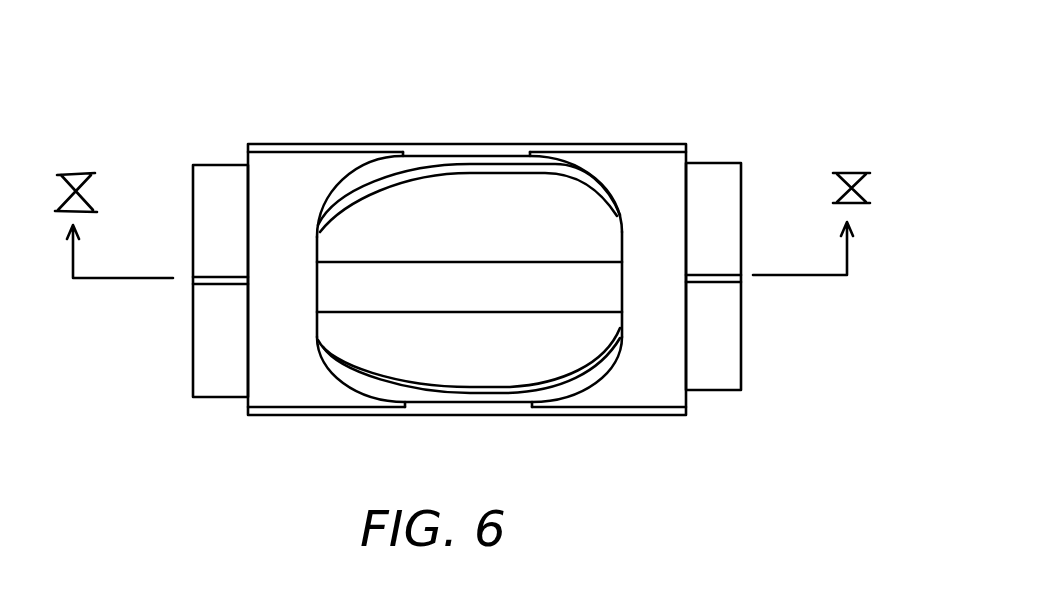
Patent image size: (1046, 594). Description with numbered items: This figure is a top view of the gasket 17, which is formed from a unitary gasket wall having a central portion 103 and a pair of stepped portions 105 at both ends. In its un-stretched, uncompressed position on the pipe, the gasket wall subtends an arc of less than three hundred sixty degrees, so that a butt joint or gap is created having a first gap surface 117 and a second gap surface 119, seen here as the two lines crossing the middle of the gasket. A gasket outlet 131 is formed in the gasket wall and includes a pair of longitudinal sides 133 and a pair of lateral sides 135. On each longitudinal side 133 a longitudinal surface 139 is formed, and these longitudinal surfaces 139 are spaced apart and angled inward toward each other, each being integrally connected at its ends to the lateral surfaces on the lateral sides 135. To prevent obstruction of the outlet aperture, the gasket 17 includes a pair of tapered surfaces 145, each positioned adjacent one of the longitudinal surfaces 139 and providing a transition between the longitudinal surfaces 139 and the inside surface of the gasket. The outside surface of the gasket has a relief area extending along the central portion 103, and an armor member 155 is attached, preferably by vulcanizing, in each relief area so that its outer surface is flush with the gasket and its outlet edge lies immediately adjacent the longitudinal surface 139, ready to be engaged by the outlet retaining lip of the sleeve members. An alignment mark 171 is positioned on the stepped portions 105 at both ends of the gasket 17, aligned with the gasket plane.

The gasket 17 is at (639, 91).
The central portion 103 is at (336, 126).
The stepped portions 105 is at (220, 145).
The first gap surface 117 is at (404, 262).
The second gap surface 119 is at (447, 312).
The gasket outlet 131 is at (398, 256).
The longitudinal sides 133 is at (503, 153).
The lateral sides 135 is at (316, 292).
The longitudinal surfaces 139 is at (372, 160).
The tapered surfaces 145 is at (452, 167).
The armor member 155 is at (485, 406).
The alignment mark 171 is at (215, 284).